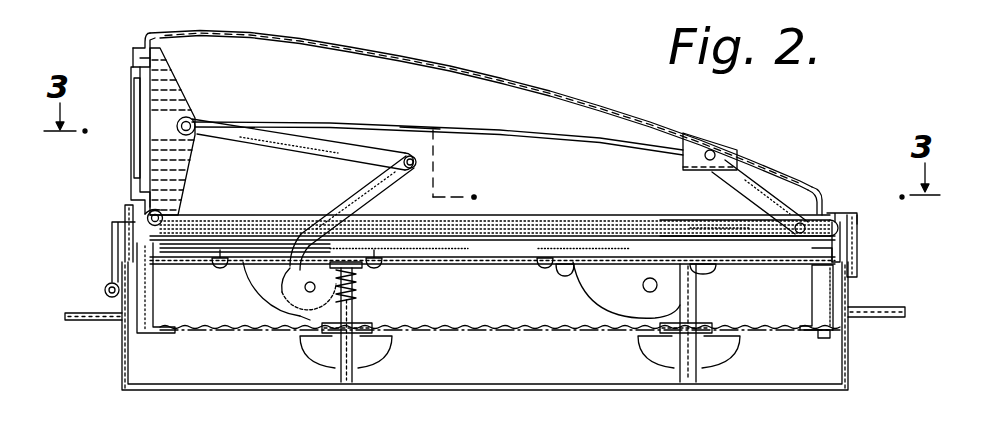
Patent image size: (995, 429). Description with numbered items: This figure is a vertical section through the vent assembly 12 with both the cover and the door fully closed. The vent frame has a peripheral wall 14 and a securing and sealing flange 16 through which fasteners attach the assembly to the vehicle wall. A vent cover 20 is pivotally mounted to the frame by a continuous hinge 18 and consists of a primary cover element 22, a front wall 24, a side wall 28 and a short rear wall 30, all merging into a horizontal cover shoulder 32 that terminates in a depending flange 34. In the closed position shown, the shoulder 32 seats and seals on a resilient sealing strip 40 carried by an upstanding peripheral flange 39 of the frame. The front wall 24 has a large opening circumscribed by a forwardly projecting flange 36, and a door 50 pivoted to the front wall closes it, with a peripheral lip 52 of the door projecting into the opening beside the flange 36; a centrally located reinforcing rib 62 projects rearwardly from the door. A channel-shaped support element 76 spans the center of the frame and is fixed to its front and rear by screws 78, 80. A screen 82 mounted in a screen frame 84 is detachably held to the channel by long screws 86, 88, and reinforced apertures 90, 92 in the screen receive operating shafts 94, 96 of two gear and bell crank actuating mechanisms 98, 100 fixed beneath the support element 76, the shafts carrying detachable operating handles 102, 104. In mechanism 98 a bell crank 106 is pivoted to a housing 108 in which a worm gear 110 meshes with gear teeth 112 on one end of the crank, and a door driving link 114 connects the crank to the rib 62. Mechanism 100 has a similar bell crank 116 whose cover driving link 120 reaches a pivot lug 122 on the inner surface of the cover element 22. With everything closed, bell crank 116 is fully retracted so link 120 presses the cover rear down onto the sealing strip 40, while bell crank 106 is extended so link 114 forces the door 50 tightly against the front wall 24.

The vent assembly 12 is at (62, 243).
The peripheral wall 14 is at (122, 365).
The securing and sealing flange 16 is at (92, 322).
The continuous hinge 18 is at (104, 290).
The vent cover 20 is at (481, 99).
The primary cover element 22 is at (342, 46).
The front wall 24 is at (140, 48).
The side wall 28 is at (510, 189).
The rear wall 30 is at (828, 196).
The cover shoulder 32 is at (135, 214).
The depending flange 34 is at (118, 262).
The opening flange 36 is at (140, 60).
The upstanding peripheral flange 39 is at (828, 250).
The sealing strip 40 is at (540, 226).
The door 50 is at (126, 155).
The peripheral lip 52 is at (131, 103).
The reinforcing rib 62 is at (192, 118).
The support element 76 is at (456, 258).
The screw 78 is at (128, 240).
The screw 80 is at (846, 240).
The screen 82 is at (400, 334).
The screen frame 84 is at (804, 334).
The screw 86 is at (152, 336).
The screw 88 is at (824, 340).
The reinforced aperture 90 is at (310, 354).
The reinforced aperture 92 is at (656, 336).
The operating shaft 94 is at (364, 314).
The operating shaft 96 is at (702, 314).
The actuating mechanism 98 is at (246, 294).
The actuating mechanism 100 is at (594, 303).
The operating handle 102 is at (378, 362).
The operating handle 104 is at (665, 358).
The bell crank 106 is at (316, 210).
The housing 108 is at (268, 306).
The worm gear 110 is at (366, 290).
The gear teeth 112 is at (296, 332).
The door driving link 114 is at (318, 158).
The bell crank 116 is at (706, 222).
The cover driving link 120 is at (724, 176).
The pivot lug 122 is at (681, 161).